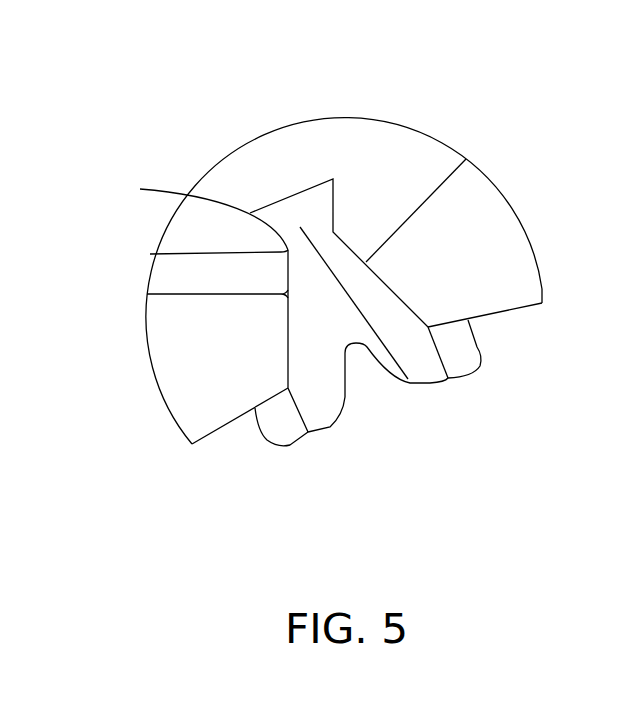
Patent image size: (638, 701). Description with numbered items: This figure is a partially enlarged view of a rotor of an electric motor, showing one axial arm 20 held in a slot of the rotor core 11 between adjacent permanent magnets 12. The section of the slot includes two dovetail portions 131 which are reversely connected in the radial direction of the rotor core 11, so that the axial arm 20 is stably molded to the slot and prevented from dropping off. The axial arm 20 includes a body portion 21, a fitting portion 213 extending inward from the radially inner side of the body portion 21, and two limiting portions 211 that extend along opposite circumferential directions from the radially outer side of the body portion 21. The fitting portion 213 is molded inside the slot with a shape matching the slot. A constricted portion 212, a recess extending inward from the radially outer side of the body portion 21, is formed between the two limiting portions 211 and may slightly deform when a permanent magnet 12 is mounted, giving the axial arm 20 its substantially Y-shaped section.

The rotor core 11 is at (350, 150).
The permanent magnet 12 is at (463, 228).
The dovetail portion 131 is at (140, 189).
The axial arm 20 is at (391, 483).
The body portion 21 is at (332, 307).
The limiting portion 211 is at (287, 417).
The constricted portion 212 is at (358, 366).
The fitting portion 213 is at (408, 379).